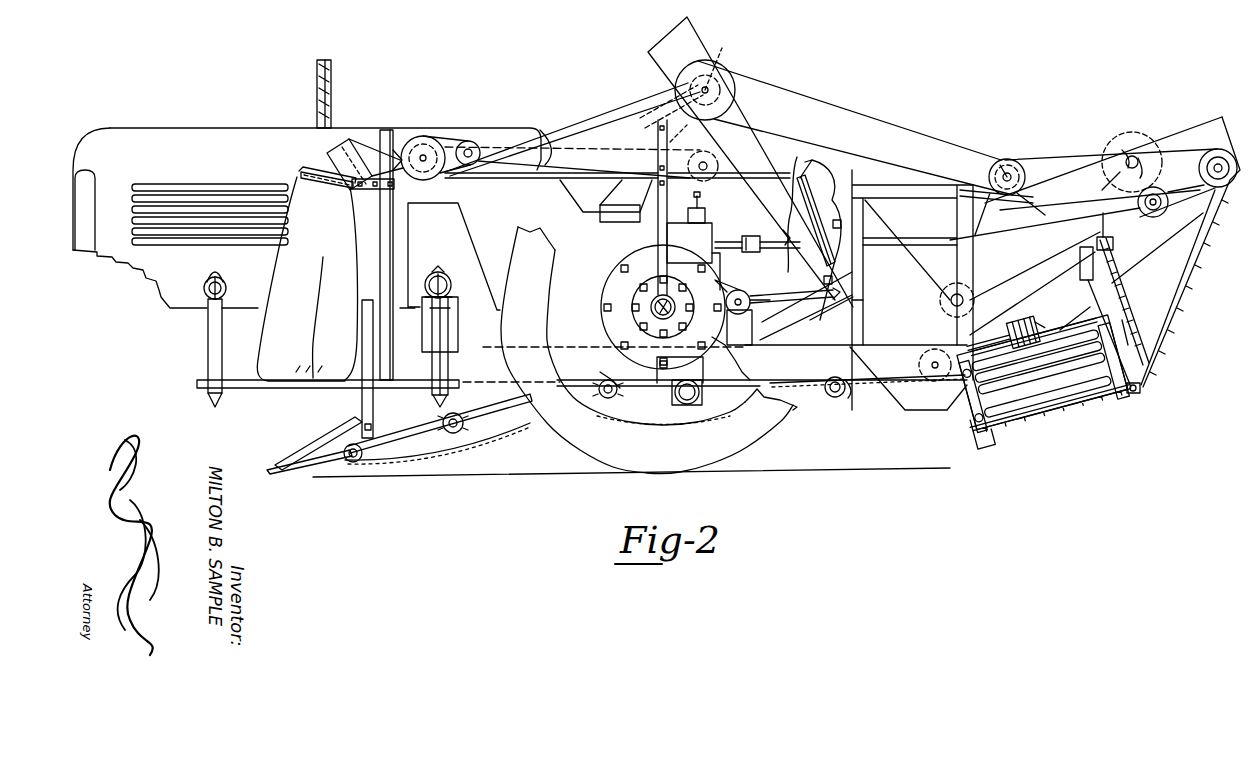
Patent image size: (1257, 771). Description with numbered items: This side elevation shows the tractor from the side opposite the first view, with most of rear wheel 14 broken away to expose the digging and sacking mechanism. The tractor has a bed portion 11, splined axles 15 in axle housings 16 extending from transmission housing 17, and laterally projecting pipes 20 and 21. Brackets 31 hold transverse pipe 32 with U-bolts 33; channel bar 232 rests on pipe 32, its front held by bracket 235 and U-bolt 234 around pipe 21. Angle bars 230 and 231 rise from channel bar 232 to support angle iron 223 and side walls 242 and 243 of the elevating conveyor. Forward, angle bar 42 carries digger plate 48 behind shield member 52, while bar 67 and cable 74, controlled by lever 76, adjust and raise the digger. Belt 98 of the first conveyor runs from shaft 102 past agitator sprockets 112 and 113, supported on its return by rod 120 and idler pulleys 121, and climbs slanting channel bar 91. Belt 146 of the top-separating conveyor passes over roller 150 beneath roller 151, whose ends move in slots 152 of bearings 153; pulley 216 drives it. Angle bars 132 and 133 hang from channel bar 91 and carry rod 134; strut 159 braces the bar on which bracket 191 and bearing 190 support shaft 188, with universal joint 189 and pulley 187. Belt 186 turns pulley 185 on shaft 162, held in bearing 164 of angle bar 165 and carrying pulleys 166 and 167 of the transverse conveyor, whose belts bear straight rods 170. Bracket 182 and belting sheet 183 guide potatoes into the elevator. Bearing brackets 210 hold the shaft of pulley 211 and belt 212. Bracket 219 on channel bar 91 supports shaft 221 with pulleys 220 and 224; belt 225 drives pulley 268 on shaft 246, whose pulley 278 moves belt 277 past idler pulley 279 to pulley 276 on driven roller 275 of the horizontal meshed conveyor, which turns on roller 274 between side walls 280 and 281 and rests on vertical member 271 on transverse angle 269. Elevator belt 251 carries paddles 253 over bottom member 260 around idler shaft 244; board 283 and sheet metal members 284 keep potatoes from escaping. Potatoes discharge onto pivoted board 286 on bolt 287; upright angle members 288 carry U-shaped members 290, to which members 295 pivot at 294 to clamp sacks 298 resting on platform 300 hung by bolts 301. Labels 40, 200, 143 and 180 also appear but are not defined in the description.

The machine body hood 40 is at (187, 137).
The upright post 20 is at (224, 283).
The pointed post tip 301 is at (220, 404).
The cross bar 300 is at (291, 389).
The frame member 11 is at (255, 306).
The support leg 298 is at (307, 279).
The slanted bar 295 is at (312, 182).
The bar plate 294 is at (347, 190).
The bracket 290 is at (370, 192).
The bracket plate 286 is at (327, 156).
The bracket arm 287 is at (345, 137).
The vertical post 288 is at (394, 227).
The leg member 67 is at (374, 399).
The pulley 276 is at (422, 136).
The idler pulley 279 is at (476, 141).
The pulley bracket 275 is at (420, 178).
The belt run 281 is at (617, 162).
The belt run 280 is at (588, 148).
The strut 277 is at (577, 120).
The strut 284 is at (662, 86).
The link 283 is at (680, 136).
The pulley 274 is at (710, 178).
The beam 242 is at (662, 44).
The pulley 268 is at (690, 70).
The pulley hub 246 is at (710, 85).
The shaft line 278 is at (715, 50).
The belt 225 is at (828, 118).
The casing edge 243 is at (808, 166).
The tilted bar 260 is at (826, 226).
The clevis 253 is at (783, 236).
The drive rod 189 is at (756, 248).
The pulley 200 is at (740, 290).
The rod 212 is at (790, 294).
The rod end 251 is at (824, 266).
The pin 211 is at (760, 300).
The bracket block 210 is at (789, 308).
The disk rim 16 is at (683, 305).
The disk inner ring 15 is at (645, 315).
The hub 269 is at (675, 282).
The vertical shaft 271 is at (657, 233).
The gearbox 17 is at (680, 255).
The bracket 74 is at (612, 205).
The strut 76 is at (598, 187).
The casing 14 is at (770, 450).
The bearing 21 is at (448, 284).
The bearing cap 234 is at (440, 274).
The cylinder 235 is at (460, 328).
The conveyor bar 42 is at (440, 422).
The chain 98 is at (470, 444).
The blade arm 52 is at (330, 432).
The blade 48 is at (292, 462).
The sprocket 102 is at (345, 455).
The gear 112 is at (443, 430).
The gear 113 is at (618, 395).
The bracket 31 is at (680, 368).
The bearing 33 is at (700, 396).
The bearing housing 32 is at (676, 396).
The frame beam 232 is at (762, 365).
The frame 223 is at (884, 190).
The cross bar 188 is at (930, 238).
The frame post 230 is at (865, 299).
The pulley 231 is at (972, 268).
The pulley 244 is at (930, 364).
The pulley 221 is at (990, 172).
The bracket 224 is at (1016, 160).
The belt 220 is at (1025, 178).
The strut 219 is at (1016, 210).
The rail 91 is at (1066, 193).
The rail 190 is at (1090, 242).
The belt 143 is at (1205, 166).
The fan 151 is at (1145, 140).
The fan hub 152 is at (1125, 136).
The fan blade 153 is at (1102, 184).
The pulley 216 is at (1215, 156).
The pulley 150 is at (1166, 206).
The frame 146 is at (1187, 290).
The strut 134 is at (1156, 252).
The bar 186 is at (1128, 290).
The block 187 is at (1113, 245).
The cylinder 191 is at (1080, 282).
The link 159 is at (1092, 306).
The roller 182 is at (1003, 325).
The roller end 183 is at (1040, 328).
The link 162 is at (1135, 335).
The strut 185 is at (1152, 347).
The block 133 is at (1141, 388).
The roller frame 166 is at (1108, 397).
The roller 180 is at (1045, 397).
The roller 170 is at (1075, 385).
The rail 167 is at (1018, 425).
The end plate 164 is at (963, 408).
The pin 165 is at (970, 422).
The end plate 132 is at (985, 432).
The roller 120 is at (830, 397).
The roller bracket 121 is at (850, 395).